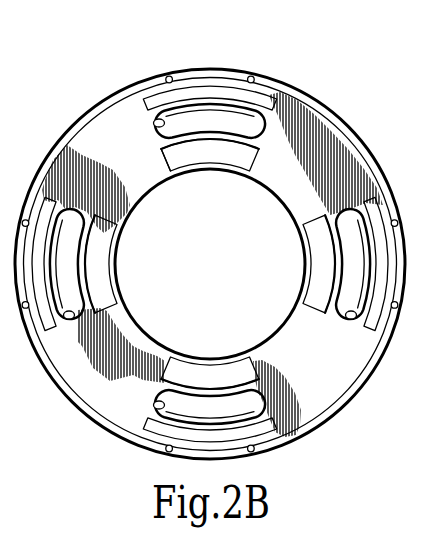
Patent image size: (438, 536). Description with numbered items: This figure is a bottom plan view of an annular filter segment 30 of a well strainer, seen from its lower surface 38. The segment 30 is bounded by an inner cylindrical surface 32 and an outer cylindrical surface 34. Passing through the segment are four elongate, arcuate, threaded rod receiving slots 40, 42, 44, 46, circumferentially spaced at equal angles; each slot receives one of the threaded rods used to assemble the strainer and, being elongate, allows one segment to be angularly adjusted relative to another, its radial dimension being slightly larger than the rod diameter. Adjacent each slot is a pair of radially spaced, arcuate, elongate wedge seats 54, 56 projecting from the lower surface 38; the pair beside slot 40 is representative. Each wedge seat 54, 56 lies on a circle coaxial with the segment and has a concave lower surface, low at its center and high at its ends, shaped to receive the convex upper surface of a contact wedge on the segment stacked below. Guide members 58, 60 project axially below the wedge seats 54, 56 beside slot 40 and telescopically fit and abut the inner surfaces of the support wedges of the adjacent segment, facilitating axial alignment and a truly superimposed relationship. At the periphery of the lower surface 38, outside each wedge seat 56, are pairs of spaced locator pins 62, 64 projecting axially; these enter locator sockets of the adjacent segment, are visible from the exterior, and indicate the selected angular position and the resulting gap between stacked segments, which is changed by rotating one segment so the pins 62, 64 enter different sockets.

The annular filter segment 30 is at (210, 229).
The inner cylindrical surface 32 is at (140, 199).
The outer cylindrical surface 34 is at (88, 110).
The lower surface 38 is at (96, 414).
The threaded rod receiving slot 40 is at (158, 127).
The threaded rod receiving slot 42 is at (68, 318).
The threaded rod receiving slot 44 is at (157, 408).
The threaded rod receiving slot 46 is at (345, 318).
The wedge seat 54 is at (222, 150).
The wedge seat 56 is at (212, 86).
The guide member 58 is at (164, 147).
The guide member 60 is at (152, 115).
The locator pin 62 is at (168, 76).
The locator pin 64 is at (250, 77).